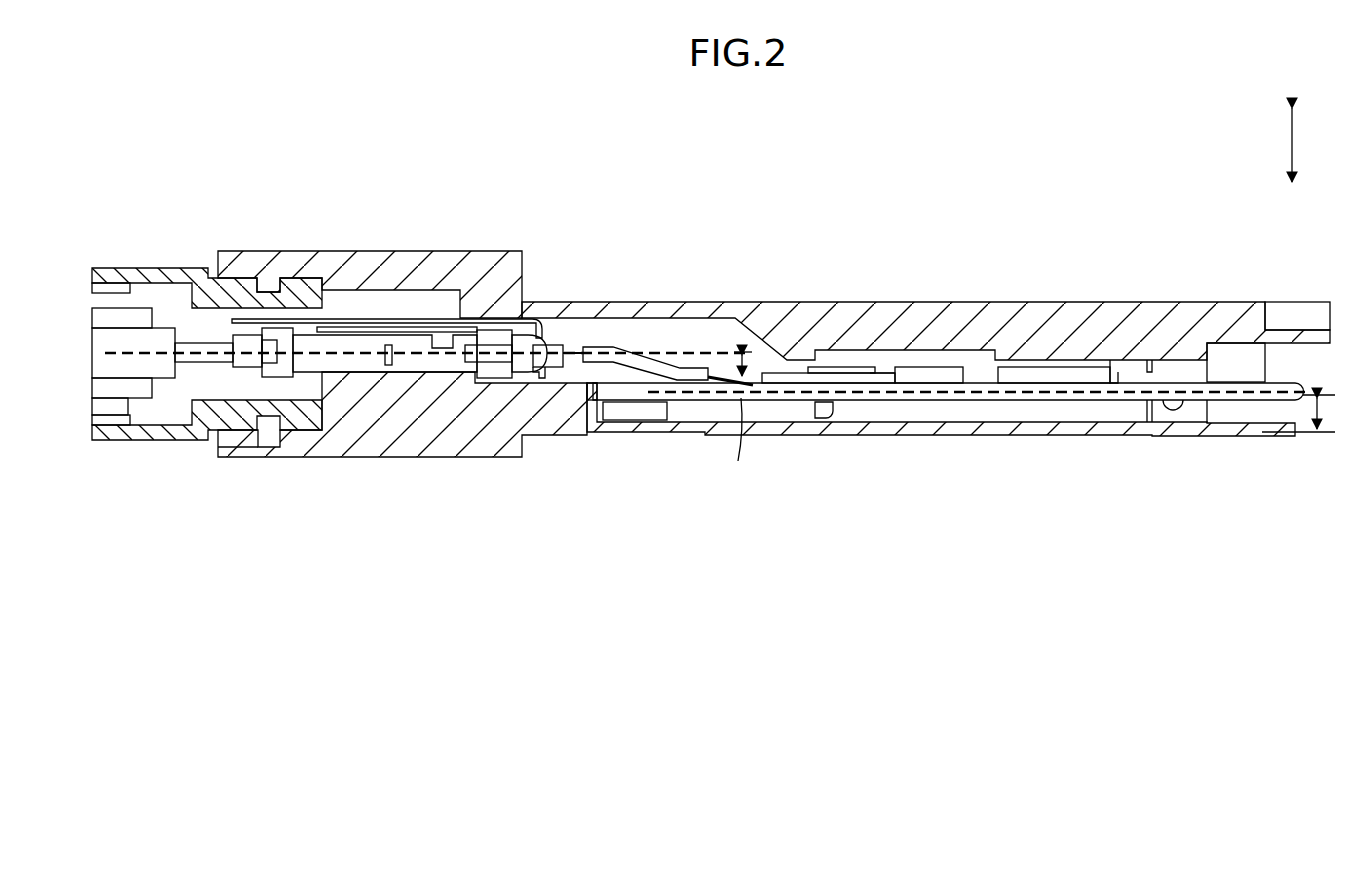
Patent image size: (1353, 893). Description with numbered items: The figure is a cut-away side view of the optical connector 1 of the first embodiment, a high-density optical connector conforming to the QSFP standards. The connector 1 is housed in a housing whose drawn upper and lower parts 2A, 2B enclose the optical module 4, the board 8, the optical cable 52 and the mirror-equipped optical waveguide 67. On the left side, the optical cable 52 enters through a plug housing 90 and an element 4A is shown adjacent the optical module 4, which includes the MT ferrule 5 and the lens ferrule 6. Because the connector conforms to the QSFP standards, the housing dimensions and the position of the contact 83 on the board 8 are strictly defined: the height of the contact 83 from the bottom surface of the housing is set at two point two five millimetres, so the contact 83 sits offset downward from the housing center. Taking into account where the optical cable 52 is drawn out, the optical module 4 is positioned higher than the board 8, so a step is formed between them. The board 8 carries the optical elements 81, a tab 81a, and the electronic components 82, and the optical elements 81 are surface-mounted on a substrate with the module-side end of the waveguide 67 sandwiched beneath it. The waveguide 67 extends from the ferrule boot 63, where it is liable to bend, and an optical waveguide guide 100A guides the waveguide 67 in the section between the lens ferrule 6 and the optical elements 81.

The optical connector 1 is at (1018, 147).
The upper housing 2A is at (929, 298).
The lower housing 2B is at (930, 439).
The optical module 4 is at (633, 340).
The plate 4A is at (378, 315).
The MT ferrule 5 is at (345, 358).
The lens ferrule 6 is at (443, 358).
The board 8 is at (1135, 384).
The optical cable 52 is at (143, 352).
The ferrule boot 63 is at (553, 350).
The mirror-equipped optical waveguide 67 is at (722, 377).
The optical elements 81 is at (838, 378).
The contact tab 81a is at (792, 378).
The electronic components 82 is at (1056, 378).
The contact 83 is at (1232, 378).
The plug housing 90 is at (151, 263).
The optical waveguide guide 100A is at (648, 379).